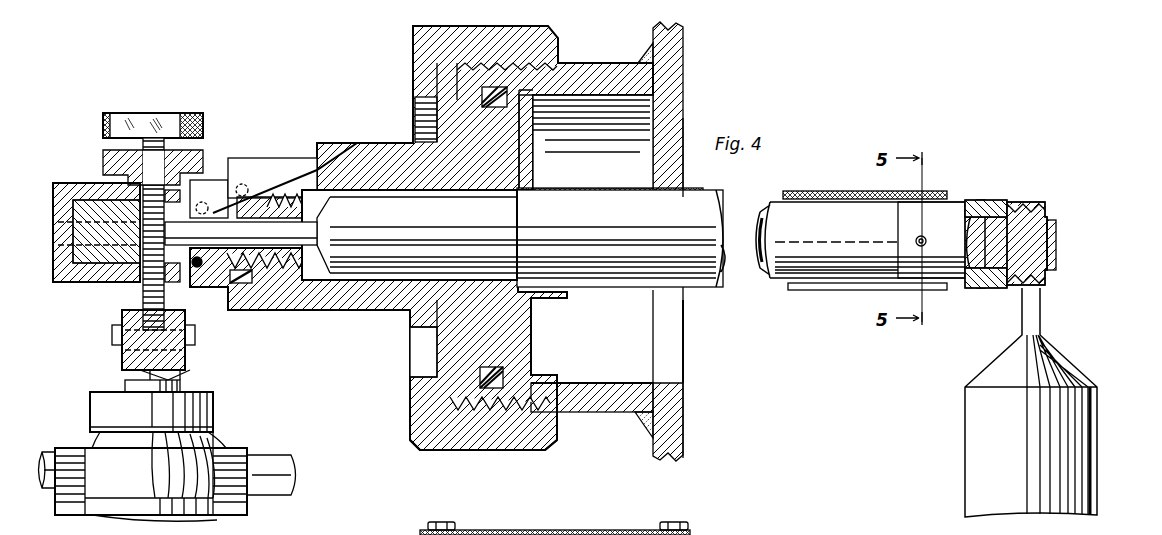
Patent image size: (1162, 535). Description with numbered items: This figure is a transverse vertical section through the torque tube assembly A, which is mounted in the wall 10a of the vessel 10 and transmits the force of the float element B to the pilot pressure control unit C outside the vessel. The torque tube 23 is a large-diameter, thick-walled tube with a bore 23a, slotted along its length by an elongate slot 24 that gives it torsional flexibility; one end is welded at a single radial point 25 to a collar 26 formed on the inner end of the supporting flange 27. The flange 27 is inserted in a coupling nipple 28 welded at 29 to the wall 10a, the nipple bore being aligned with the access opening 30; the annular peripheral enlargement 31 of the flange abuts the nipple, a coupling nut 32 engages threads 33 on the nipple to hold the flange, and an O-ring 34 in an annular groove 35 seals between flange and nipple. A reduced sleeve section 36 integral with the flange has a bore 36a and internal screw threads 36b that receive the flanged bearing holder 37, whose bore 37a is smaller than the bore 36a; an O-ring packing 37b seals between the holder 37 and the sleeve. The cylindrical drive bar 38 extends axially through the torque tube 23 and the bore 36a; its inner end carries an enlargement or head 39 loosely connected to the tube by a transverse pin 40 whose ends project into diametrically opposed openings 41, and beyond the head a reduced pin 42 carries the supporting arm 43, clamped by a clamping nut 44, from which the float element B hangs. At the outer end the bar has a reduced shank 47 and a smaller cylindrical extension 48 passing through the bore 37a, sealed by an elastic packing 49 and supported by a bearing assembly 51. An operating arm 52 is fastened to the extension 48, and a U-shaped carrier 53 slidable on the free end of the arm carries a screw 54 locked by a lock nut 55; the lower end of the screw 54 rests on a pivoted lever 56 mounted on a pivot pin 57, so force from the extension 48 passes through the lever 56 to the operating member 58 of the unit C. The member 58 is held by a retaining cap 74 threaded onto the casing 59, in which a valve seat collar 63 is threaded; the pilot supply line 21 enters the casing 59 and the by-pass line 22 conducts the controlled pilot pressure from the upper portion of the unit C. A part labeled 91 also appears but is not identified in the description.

The vessel 10 is at (658, 38).
The wall 10a is at (683, 433).
The pilot pressure supply line 21 is at (40, 455).
The by-pass line 22 is at (280, 458).
The torque tube 23 is at (942, 205).
The bore of the torque tube 23a is at (848, 191).
The elongate slot 24 is at (798, 290).
The weld at single radial point 25 is at (588, 186).
The collar 26 is at (560, 172).
The supporting flange 27 is at (495, 332).
The coupling nipple 28 is at (618, 393).
The weld 29 is at (640, 430).
The access opening 30 is at (683, 378).
The annular peripheral enlargement 31 is at (413, 385).
The coupling nut 32 is at (422, 440).
The threads 33 is at (475, 450).
The O-ring 34 is at (515, 378).
The annular groove 35 is at (518, 358).
The reduced sleeve section 36 is at (410, 145).
The bore of the sleeve section 36a is at (388, 191).
The internal screw threads 36b is at (287, 193).
The flanged bearing holder 37 is at (225, 292).
The bore of the bearing holder 37a is at (290, 258).
The O-ring packing 37b is at (245, 292).
The drive bar 38 is at (718, 205).
The enlargement or head 39 is at (973, 205).
The transverse pin 40 is at (935, 285).
The openings 41 is at (923, 242).
The reduced pin 42 is at (1057, 238).
The supporting arm 43 is at (1000, 202).
The clamping nut 44 is at (1040, 205).
The reduced shank 47 is at (272, 285).
The cylindrical extension 48 is at (140, 270).
The packing 49 is at (250, 215).
The bearing assembly 51 is at (210, 295).
The operating arm 52 is at (70, 282).
The U-shaped carrier 53 is at (82, 185).
The screw 54 is at (166, 116).
The lock nut 55 is at (108, 160).
The pivoted lever 56 is at (122, 360).
The pivot pin 57 is at (112, 338).
The operating member 58 is at (195, 385).
The casing 59 is at (217, 447).
The valve seat collar 63 is at (545, 534).
The retaining cap 74 is at (90, 404).
The bolt 91 is at (610, 534).
The torque tube assembly A is at (683, 118).
The float element B is at (1060, 352).
The pilot pressure control unit C is at (213, 415).